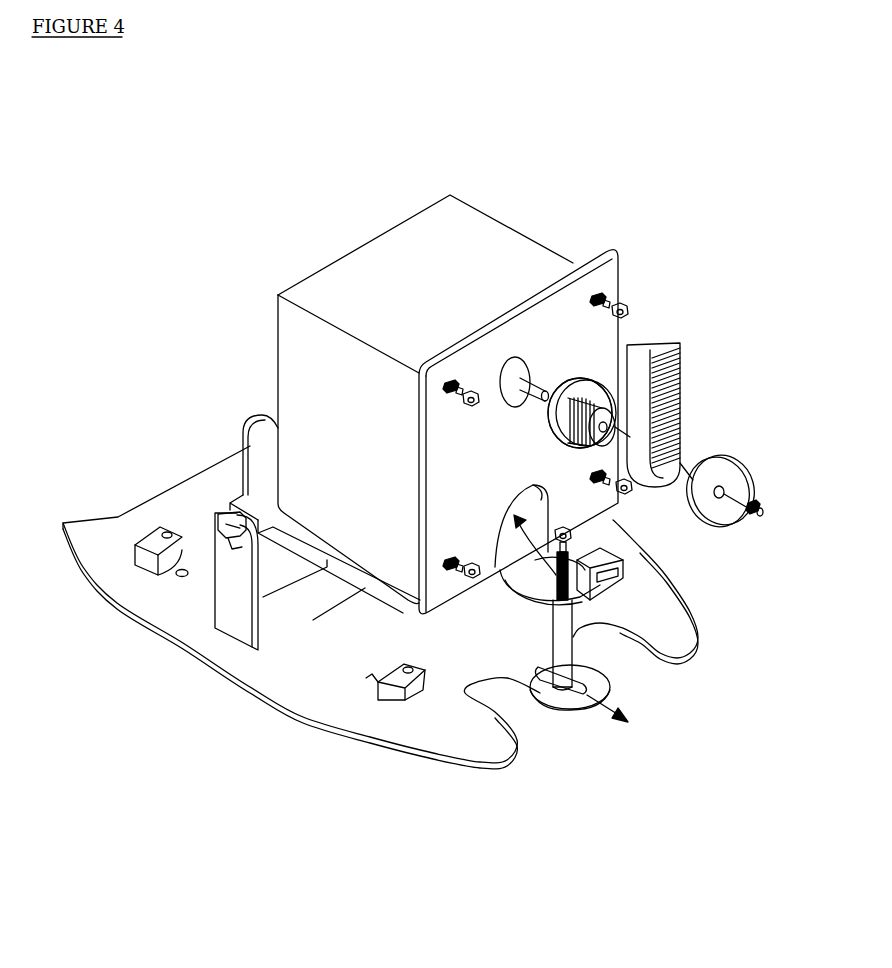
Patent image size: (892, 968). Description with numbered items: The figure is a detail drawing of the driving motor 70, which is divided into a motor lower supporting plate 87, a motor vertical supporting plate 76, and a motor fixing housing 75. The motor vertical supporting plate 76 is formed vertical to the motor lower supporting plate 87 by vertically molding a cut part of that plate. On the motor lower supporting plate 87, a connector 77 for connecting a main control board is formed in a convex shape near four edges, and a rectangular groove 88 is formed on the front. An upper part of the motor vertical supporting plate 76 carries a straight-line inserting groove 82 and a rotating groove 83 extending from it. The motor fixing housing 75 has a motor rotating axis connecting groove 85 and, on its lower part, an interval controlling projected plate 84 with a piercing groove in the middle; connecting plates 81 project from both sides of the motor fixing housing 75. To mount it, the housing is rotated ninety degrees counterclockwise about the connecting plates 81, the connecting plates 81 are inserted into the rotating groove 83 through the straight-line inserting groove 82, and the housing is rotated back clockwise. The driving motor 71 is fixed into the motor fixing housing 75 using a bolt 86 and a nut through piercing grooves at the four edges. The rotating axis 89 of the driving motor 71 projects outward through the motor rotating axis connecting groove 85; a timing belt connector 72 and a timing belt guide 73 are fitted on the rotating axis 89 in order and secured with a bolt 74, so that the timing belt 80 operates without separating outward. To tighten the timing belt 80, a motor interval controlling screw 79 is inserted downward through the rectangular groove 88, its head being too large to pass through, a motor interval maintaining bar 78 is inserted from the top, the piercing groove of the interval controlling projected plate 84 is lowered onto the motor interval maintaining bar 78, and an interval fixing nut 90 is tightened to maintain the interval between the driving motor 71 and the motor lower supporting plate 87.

The driving motor 70 is at (591, 205).
The driving motor 71 is at (483, 243).
The timing belt connector 72 is at (608, 350).
The timing belt guide 73 is at (730, 462).
The bolt 74 is at (755, 508).
The motor fixing housing 75 is at (262, 472).
The motor vertical supporting plate 76 is at (238, 622).
The connector 77 is at (158, 530).
The motor interval maintaining bar 78 is at (620, 635).
The motor interval controlling screw 79 is at (606, 562).
The timing belt 80 is at (680, 395).
The connecting plates 81 is at (230, 550).
The straight-line inserting groove 82 is at (232, 516).
The rotating groove 83 is at (254, 652).
The interval controlling projected plate 84 is at (530, 650).
The motor rotating axis connecting groove 85 is at (533, 362).
The bolt 86 is at (604, 296).
The motor lower supporting plate 87 is at (318, 705).
The rectangular groove 88 is at (604, 702).
The rotating axis 89 is at (600, 330).
The interval fixing nut 90 is at (575, 534).